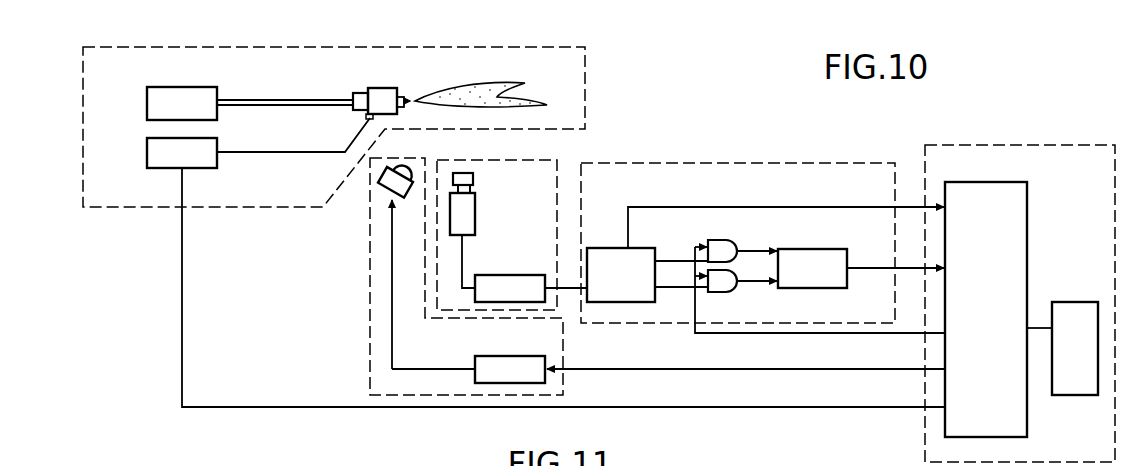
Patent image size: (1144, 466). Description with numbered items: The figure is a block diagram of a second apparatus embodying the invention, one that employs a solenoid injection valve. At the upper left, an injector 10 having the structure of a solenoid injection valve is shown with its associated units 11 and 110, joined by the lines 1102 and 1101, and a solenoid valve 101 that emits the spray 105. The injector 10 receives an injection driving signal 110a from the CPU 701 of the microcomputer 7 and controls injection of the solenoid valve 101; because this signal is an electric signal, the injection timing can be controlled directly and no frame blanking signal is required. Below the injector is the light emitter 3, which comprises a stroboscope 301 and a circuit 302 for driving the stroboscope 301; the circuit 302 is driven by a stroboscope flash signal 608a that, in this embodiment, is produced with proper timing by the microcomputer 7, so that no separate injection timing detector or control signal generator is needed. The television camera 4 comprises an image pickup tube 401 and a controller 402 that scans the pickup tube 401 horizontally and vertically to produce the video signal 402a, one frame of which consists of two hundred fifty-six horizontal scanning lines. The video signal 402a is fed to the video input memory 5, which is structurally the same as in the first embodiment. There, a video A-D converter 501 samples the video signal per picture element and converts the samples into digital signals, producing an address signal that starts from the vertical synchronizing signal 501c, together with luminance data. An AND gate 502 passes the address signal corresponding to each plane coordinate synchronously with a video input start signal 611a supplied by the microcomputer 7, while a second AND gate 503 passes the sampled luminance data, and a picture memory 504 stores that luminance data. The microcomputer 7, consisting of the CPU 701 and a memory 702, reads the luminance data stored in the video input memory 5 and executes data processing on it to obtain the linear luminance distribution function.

The injector 10 is at (588, 72).
The powder feeder 11 is at (151, 86).
The gun power source 110 is at (147, 158).
The power cable 1101 is at (218, 112).
The powder supply hose 1102 is at (254, 99).
The injection driving signal 110a is at (833, 407).
The solenoid valve 101 is at (383, 88).
The plasma flame 105 is at (537, 102).
The light emitter 3 is at (368, 328).
The stroboscope 301 is at (383, 192).
The circuit for driving the stroboscope 302 is at (497, 355).
The television camera 4 is at (553, 158).
The image pickup tube 401 is at (478, 207).
The controller 402 is at (517, 275).
The video signal 402a is at (570, 290).
The video input memory 5 is at (870, 163).
The video A-D converter 501 is at (643, 248).
The vertical synchronizing signal 501c is at (730, 207).
The AND gate 502 is at (735, 240).
The AND gate 503 is at (735, 292).
The picture memory 504 is at (823, 249).
The stroboscope flash signal 608a is at (780, 369).
The video input start signal 611a is at (905, 333).
The microcomputer 7 is at (1095, 142).
The CPU 701 is at (1027, 202).
The memory 702 is at (1062, 322).